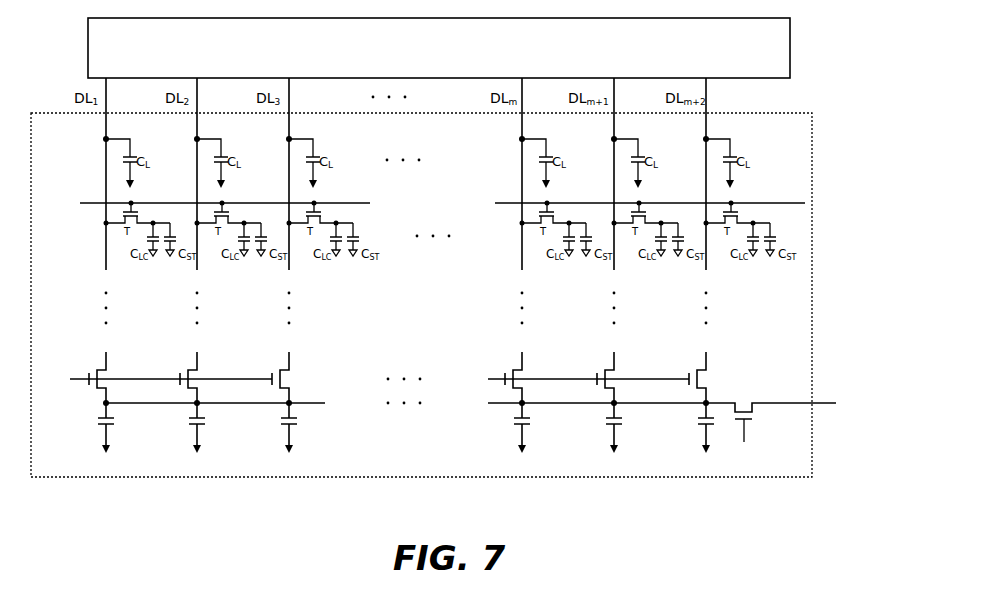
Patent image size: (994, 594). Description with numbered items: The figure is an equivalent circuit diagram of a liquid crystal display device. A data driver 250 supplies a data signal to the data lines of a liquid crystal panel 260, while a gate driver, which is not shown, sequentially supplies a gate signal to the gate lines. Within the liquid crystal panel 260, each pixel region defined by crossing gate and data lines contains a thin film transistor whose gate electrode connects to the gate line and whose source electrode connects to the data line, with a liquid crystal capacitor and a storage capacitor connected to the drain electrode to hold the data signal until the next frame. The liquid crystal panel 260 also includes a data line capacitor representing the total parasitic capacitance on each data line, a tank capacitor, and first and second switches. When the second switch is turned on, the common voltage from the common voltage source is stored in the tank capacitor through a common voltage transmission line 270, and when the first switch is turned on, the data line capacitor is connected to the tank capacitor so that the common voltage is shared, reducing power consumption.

The data driver 250 is at (790, 48).
The liquid crystal panel 260 is at (812, 160).
The common voltage transmission line 270 is at (673, 403).